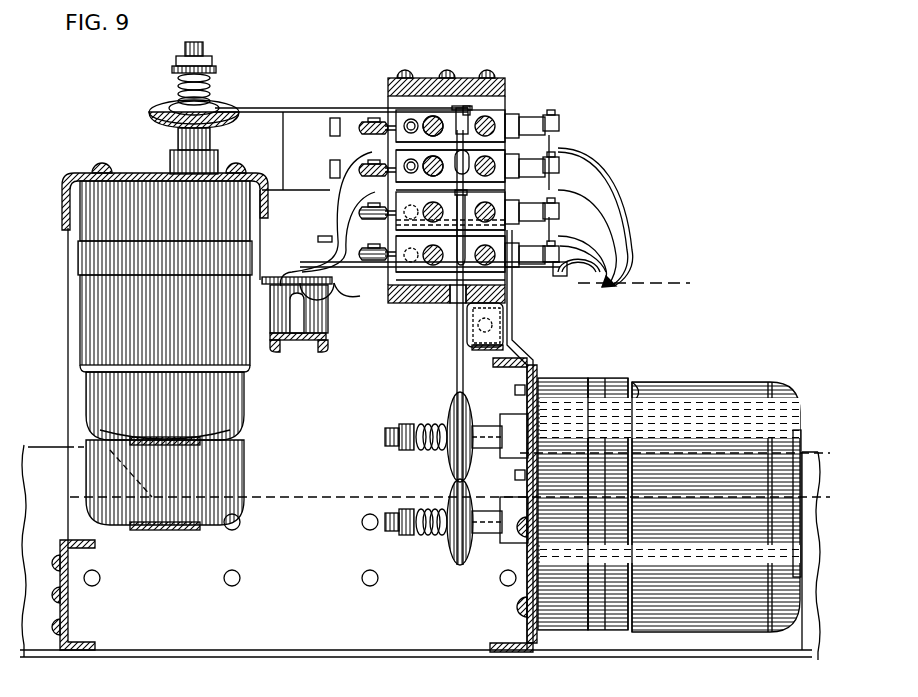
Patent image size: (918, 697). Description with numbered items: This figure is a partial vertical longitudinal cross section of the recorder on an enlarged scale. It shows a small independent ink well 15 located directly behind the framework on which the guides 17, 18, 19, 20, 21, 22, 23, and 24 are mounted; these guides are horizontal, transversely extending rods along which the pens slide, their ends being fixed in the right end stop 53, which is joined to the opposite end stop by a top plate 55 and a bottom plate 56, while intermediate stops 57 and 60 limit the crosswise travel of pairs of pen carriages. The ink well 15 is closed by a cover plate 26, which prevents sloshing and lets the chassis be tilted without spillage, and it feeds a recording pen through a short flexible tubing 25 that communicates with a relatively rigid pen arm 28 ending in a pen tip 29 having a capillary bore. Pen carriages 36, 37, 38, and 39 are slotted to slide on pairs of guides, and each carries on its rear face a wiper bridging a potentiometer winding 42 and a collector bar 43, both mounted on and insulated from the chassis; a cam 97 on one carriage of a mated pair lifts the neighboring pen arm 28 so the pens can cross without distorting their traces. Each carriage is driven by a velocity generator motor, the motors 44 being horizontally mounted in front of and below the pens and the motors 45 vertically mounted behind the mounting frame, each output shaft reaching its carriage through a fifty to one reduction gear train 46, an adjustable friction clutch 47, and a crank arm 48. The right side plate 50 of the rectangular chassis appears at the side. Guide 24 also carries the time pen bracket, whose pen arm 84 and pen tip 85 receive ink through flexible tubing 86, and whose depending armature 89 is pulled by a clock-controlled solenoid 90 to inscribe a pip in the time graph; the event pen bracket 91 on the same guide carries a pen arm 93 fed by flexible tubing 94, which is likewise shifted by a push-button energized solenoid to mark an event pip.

The ink well 15 is at (312, 320).
The guide 17 is at (430, 116).
The guide 18 is at (440, 156).
The guide 19 is at (428, 218).
The guide 20 is at (432, 252).
The guide 21 is at (496, 118).
The guide 22 is at (470, 170).
The guide 23 is at (470, 214).
The guide 24 is at (470, 258).
The flexible tubing 25 is at (328, 243).
The cover plate 26 is at (281, 276).
The pen arm 28 is at (588, 222).
The pen tip 29 is at (618, 283).
The pen carriage 36 is at (552, 128).
The pen carriage 37 is at (553, 168).
The pen carriage 38 is at (553, 212).
The pen carriage 39 is at (553, 255).
The potentiometer winding 42 is at (360, 128).
The collector bar 43 is at (408, 122).
The motor 44 is at (688, 400).
The motor 45 is at (242, 445).
The reduction gear train 46 is at (146, 178).
The adjustable friction clutch 47 is at (166, 108).
The crank arm 48 is at (284, 186).
The right side plate 50 is at (808, 462).
The right end stop 53 is at (70, 351).
The top plate 55 is at (503, 86).
The bottom plate 56 is at (411, 303).
The intermediate stop 57 is at (462, 106).
The intermediate stop 60 is at (477, 280).
The pen arm 84 is at (565, 276).
The pen tip 85 is at (612, 256).
The flexible tubing 86 is at (433, 283).
The armature 89 is at (505, 326).
The solenoid 90 is at (483, 345).
The event pen bracket 91 is at (512, 272).
The pen arm 93 is at (585, 252).
The flexible tubing 94 is at (340, 284).
The cam 97 is at (551, 147).